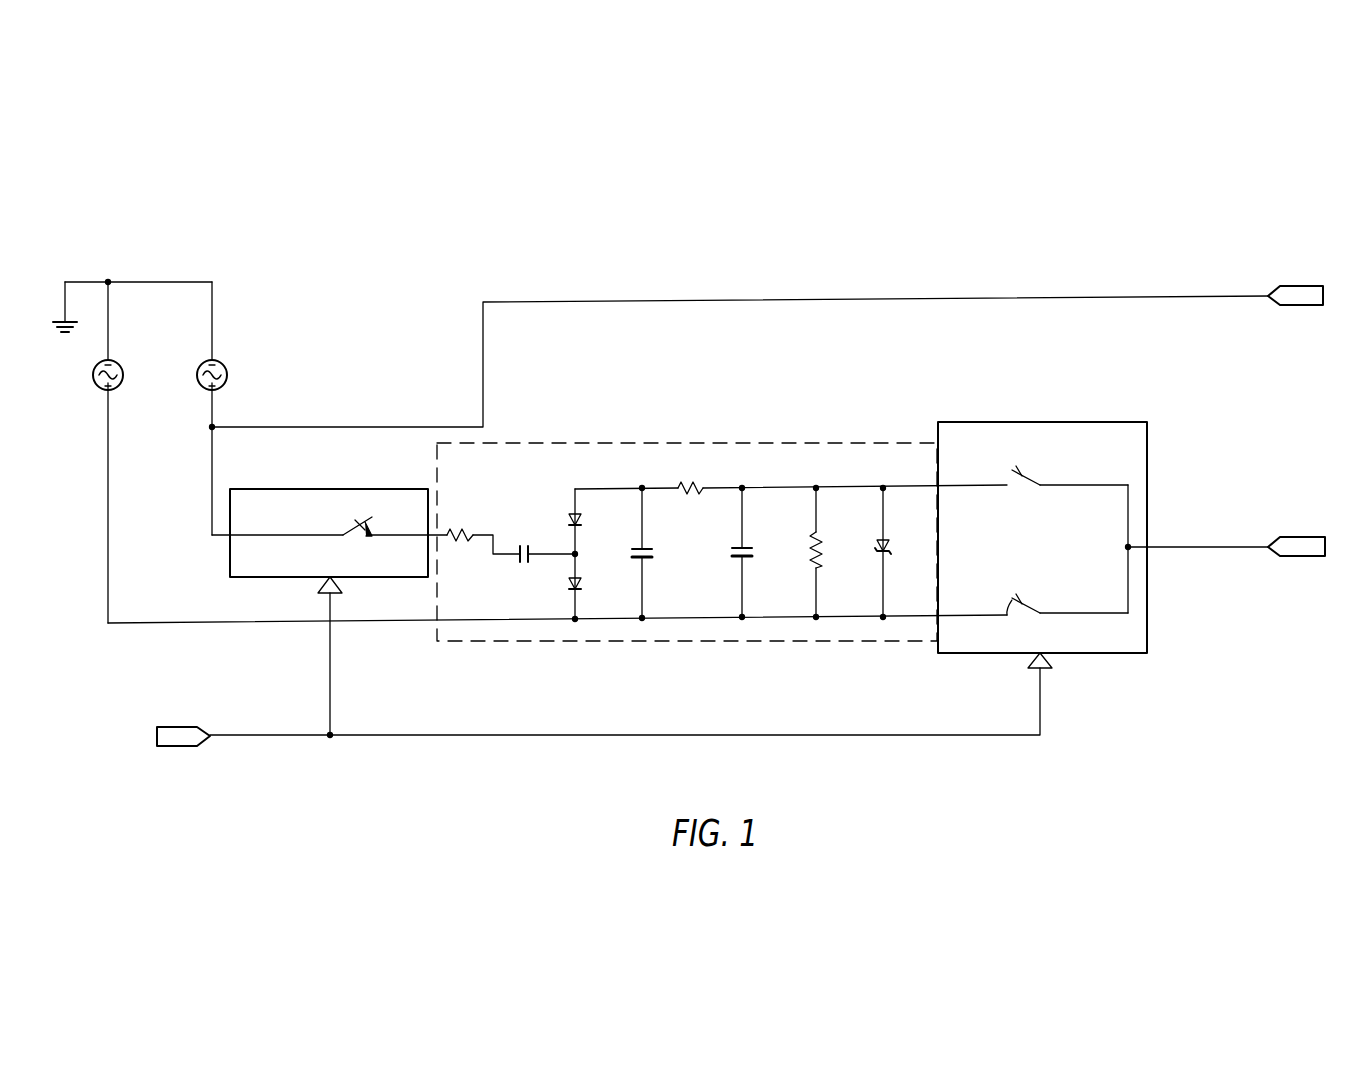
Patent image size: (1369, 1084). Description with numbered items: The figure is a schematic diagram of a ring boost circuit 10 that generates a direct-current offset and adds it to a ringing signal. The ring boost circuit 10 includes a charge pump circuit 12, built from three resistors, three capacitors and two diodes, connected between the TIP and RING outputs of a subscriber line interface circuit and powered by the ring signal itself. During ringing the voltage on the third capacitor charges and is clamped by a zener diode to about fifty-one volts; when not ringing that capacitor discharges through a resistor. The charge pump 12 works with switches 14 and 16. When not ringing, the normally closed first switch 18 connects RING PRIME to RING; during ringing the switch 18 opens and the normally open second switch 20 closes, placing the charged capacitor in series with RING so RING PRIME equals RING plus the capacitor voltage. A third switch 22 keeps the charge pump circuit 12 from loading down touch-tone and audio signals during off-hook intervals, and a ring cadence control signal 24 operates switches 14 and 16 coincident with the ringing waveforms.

The ring boost circuit 10 is at (702, 210).
The charge pump circuit 12 is at (666, 443).
The switch 14 is at (256, 489).
The switch 16 is at (1032, 422).
The first switch 18 is at (1013, 590).
The second switch 20 is at (1008, 492).
The third switch 22 is at (352, 540).
The ring cadence control signal 24 is at (176, 748).